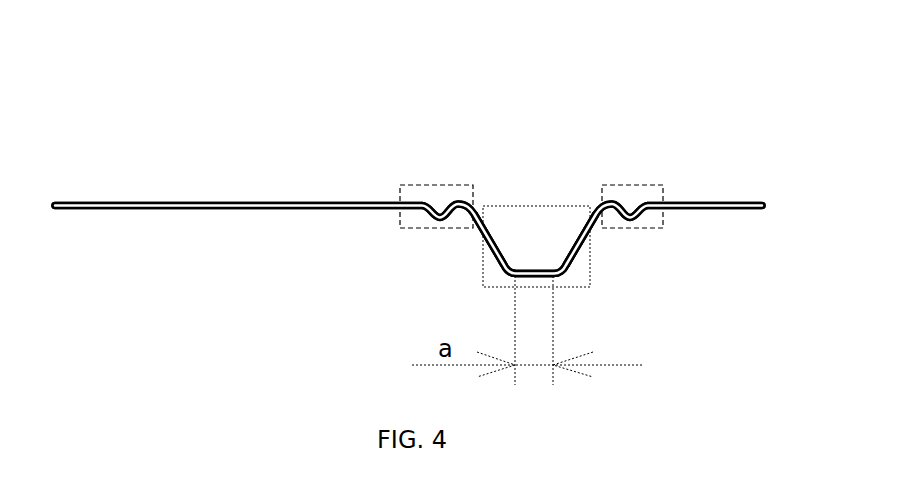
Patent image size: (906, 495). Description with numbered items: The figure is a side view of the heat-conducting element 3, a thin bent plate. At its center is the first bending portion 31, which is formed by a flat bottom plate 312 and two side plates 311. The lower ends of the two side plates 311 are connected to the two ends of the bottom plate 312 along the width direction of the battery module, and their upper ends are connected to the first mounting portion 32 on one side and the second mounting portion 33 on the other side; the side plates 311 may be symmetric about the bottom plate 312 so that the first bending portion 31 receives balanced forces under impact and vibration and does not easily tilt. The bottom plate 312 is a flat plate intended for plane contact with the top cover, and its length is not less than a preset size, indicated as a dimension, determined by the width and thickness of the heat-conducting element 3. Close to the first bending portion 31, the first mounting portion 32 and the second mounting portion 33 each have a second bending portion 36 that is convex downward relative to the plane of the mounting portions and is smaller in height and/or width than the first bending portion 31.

The heat-conducting element 3 is at (411, 219).
The first bending portion 31 is at (528, 220).
The side plates 311 is at (485, 247).
The bottom plate 312 is at (538, 272).
The first mounting portion 32 is at (252, 204).
The second mounting portion 33 is at (720, 205).
The second bending portion 36 is at (428, 185).